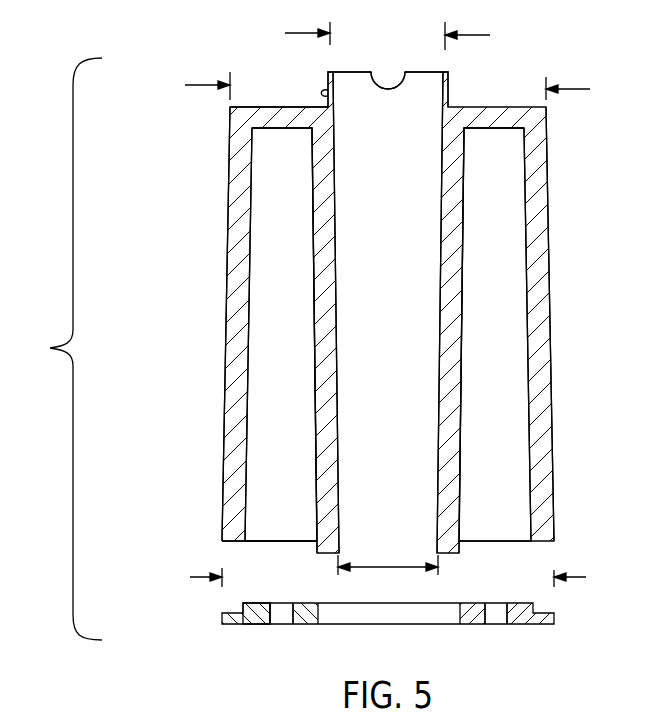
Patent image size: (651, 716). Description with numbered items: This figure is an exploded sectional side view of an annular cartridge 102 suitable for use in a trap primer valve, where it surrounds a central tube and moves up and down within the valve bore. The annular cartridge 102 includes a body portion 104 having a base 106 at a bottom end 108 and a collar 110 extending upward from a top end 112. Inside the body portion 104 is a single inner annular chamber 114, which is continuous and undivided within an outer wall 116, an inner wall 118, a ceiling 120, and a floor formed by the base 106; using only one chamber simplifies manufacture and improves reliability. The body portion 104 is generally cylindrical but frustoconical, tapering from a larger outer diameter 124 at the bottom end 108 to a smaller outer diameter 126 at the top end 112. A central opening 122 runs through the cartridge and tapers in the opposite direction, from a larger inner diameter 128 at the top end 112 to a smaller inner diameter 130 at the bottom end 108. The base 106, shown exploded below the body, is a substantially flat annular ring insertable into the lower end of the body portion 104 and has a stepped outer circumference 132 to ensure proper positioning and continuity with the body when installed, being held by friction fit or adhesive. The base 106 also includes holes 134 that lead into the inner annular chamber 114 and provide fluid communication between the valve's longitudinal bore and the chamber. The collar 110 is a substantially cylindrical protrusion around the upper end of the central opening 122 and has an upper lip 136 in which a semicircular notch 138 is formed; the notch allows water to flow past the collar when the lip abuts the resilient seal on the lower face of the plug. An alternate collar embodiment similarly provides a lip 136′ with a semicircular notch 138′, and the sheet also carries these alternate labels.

The annular cartridge 102 is at (57, 349).
The body portion 104 is at (238, 276).
The base 106 is at (259, 622).
The bottom end 108 is at (170, 535).
The collar 110 is at (330, 93).
The top end 112 is at (168, 121).
The inner annular chamber 114 is at (293, 375).
The outer wall 116 is at (235, 362).
The inner wall 118 is at (326, 358).
The ceiling 120 is at (265, 130).
The central opening 122 is at (403, 297).
The larger outer diameter 124 is at (193, 580).
The smaller outer diameter 126 is at (200, 86).
The larger inner diameter 128 is at (300, 34).
The smaller inner diameter 130 is at (400, 565).
The stepped outer circumference 132 is at (550, 606).
The holes 134 is at (294, 614).
The upper lip 136 is at (330, 72).
The semicircular notch 138 is at (390, 86).
The lip 136′ is at (507, 715).
The semicircular notch 138′ is at (568, 704).